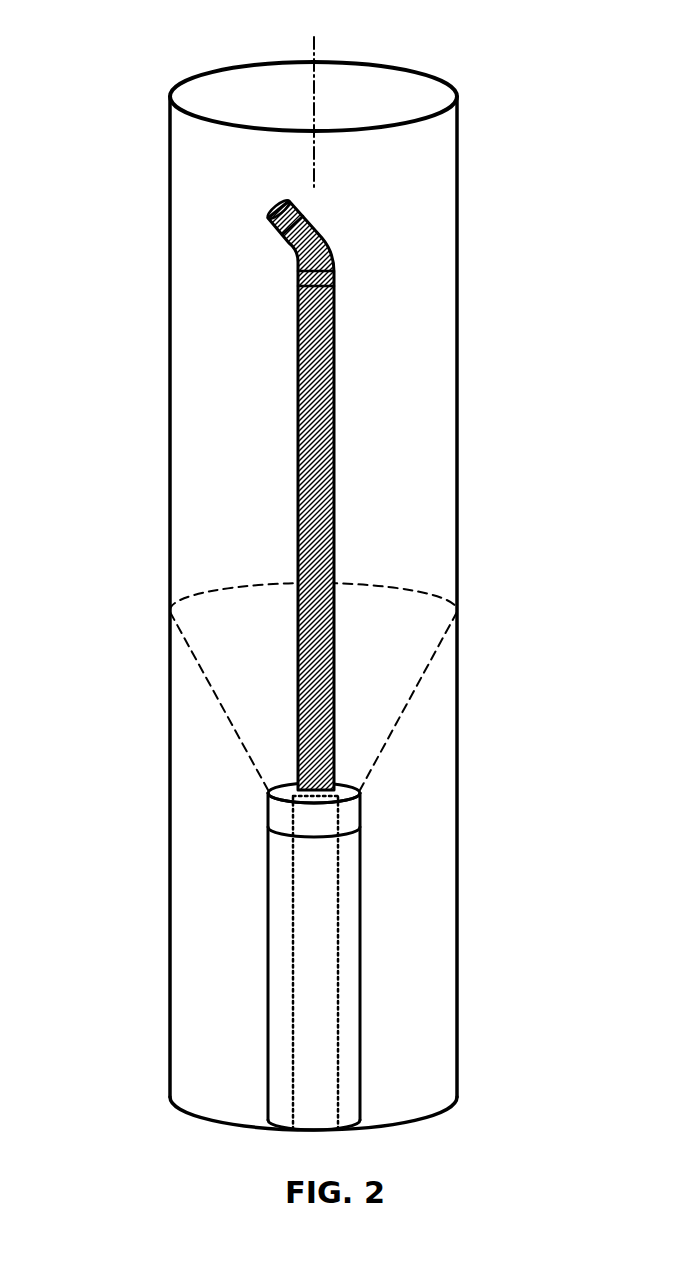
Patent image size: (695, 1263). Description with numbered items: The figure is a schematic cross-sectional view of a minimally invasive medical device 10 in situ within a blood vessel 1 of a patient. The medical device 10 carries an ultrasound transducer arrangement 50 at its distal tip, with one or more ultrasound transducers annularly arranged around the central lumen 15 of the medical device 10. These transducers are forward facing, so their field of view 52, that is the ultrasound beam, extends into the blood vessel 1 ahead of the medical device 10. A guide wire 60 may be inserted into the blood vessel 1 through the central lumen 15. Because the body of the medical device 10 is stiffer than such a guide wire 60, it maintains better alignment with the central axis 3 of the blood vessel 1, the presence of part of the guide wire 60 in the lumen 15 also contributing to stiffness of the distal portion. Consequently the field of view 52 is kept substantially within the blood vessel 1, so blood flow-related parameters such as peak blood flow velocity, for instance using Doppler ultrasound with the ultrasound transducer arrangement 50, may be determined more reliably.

The blood vessel 1 is at (458, 898).
The central axis 3 is at (315, 60).
The medical device 10 is at (270, 957).
The central lumen 15 is at (310, 897).
The ultrasound transducer arrangement 50 is at (277, 820).
The field of view 52 is at (217, 648).
The guide wire 60 is at (332, 362).